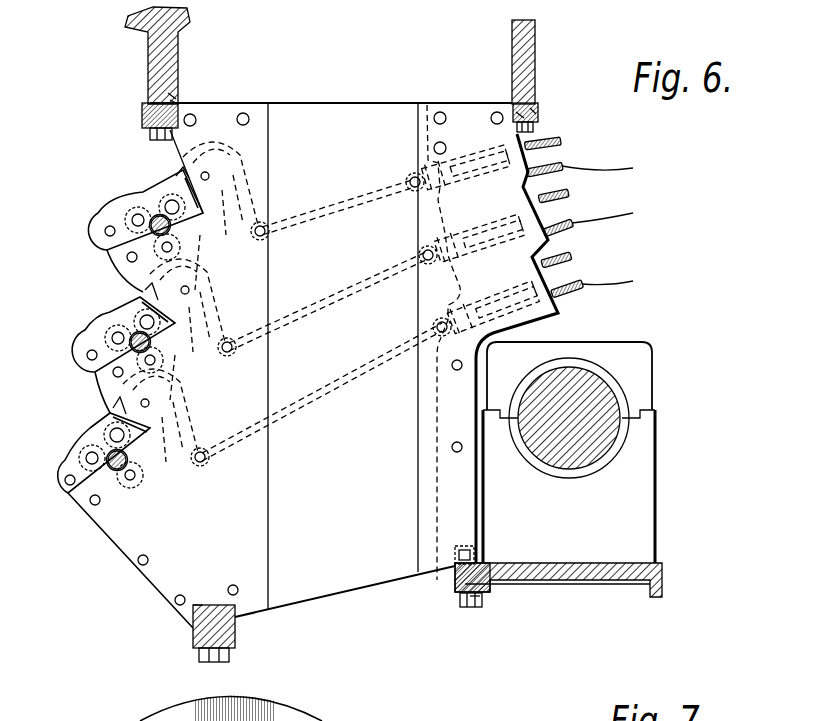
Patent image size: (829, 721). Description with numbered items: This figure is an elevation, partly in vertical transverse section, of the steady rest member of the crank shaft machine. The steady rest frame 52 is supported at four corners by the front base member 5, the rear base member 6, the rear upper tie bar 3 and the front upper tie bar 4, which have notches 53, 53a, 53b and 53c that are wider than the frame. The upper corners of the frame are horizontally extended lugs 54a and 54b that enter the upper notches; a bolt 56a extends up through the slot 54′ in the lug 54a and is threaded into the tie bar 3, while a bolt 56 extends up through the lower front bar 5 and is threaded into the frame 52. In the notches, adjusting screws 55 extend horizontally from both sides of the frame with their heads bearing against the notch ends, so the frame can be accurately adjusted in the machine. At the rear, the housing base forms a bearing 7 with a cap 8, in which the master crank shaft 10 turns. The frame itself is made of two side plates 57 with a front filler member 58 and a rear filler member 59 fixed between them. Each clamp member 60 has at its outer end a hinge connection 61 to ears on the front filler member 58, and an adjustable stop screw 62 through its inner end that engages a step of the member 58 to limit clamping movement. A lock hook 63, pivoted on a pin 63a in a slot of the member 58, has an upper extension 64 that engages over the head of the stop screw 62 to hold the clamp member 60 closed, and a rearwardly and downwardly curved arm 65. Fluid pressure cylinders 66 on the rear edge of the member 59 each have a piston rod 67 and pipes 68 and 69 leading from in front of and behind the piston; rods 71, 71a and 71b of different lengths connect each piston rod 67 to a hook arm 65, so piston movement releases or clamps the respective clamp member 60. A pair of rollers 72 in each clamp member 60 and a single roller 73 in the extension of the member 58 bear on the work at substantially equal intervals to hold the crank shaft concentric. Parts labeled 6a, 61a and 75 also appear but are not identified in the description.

The rear upper tie bar 3 is at (535, 48).
The front upper tie bar 4 is at (182, 43).
The front base member 5 is at (192, 645).
The rear base member 6 is at (560, 582).
The base lug 6a is at (481, 621).
The bearing 7 is at (645, 512).
The cap 8 is at (642, 367).
The master crank shaft 10 is at (600, 443).
The steady rest frame 52 is at (343, 120).
The notch 53 is at (452, 567).
The notch 53a is at (198, 604).
The notch 53b is at (551, 101).
The notch 53c is at (147, 107).
The horizontally extended lug 54a is at (518, 110).
The horizontally extended lug 54b is at (180, 110).
The slot 54′ is at (540, 78).
The adjusting screw 55 is at (147, 118).
The bolt 56 is at (230, 673).
The bolt 56a is at (562, 127).
The side plate 57 is at (370, 563).
The front filler member 58 is at (195, 545).
The rear filler member 59 is at (447, 480).
The clamp member 60 is at (113, 208).
The hinge connection 61 is at (107, 233).
The pin 61a is at (182, 227).
The adjustable stop screw 62 is at (170, 323).
The lock hook 63 is at (250, 152).
The pin 63a is at (209, 175).
The radial lower surface extension 64 is at (180, 176).
The rearwardly and downwardly curved arm 65 is at (267, 207).
The fluid pressure cylinder 66 is at (463, 157).
The piston rod 67 is at (413, 190).
The pipe 68 is at (561, 141).
The pipe 69 is at (609, 226).
The rod 71 is at (337, 380).
The rod 71a is at (342, 290).
The rod 71b is at (342, 207).
The roller 72 is at (162, 203).
The roller 73 is at (177, 245).
The drum 75 is at (307, 720).